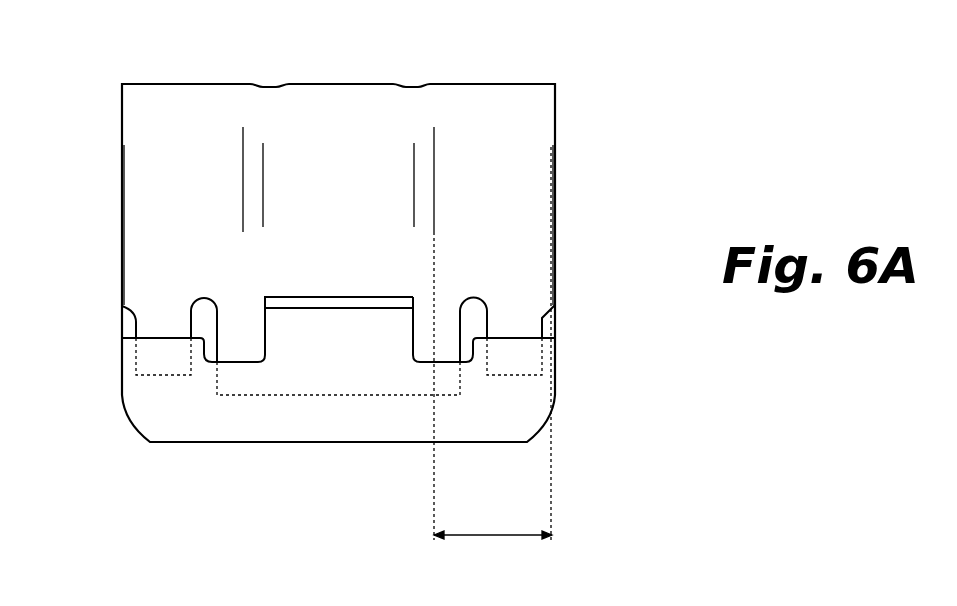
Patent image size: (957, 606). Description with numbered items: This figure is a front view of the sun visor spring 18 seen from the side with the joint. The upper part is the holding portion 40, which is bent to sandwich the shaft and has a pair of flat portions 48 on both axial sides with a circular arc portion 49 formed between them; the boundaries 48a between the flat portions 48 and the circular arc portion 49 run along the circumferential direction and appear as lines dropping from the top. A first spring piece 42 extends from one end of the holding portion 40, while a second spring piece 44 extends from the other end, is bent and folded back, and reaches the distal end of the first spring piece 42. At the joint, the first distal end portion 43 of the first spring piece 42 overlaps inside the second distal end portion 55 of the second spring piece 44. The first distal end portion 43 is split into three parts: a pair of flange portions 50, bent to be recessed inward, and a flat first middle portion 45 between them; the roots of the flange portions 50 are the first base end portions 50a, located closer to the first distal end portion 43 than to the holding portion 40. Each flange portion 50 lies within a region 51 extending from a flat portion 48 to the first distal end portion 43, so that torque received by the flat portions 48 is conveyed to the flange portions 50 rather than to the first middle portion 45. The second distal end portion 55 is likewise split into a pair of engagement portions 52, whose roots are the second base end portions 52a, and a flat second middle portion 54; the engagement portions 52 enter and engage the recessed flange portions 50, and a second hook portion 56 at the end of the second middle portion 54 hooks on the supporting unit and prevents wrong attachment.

The sun visor spring 18 is at (350, 479).
The holding portion 40 is at (356, 130).
The first spring piece 42 is at (242, 318).
The first distal end portion 43 is at (147, 362).
The second spring piece 44 is at (487, 425).
The first middle portion 45 is at (380, 397).
The flat portions 48 is at (183, 171).
The boundaries 48a is at (243, 150).
The circular arc portion 49 is at (330, 197).
The flange portions 50 is at (163, 373).
The first base end portions 50a is at (197, 299).
The region 51 is at (488, 538).
The engagement portions 52 is at (167, 340).
The second base end portions 52a is at (232, 364).
The second middle portion 54 is at (303, 318).
The second distal end portion 55 is at (202, 365).
The second hook portion 56 is at (353, 300).